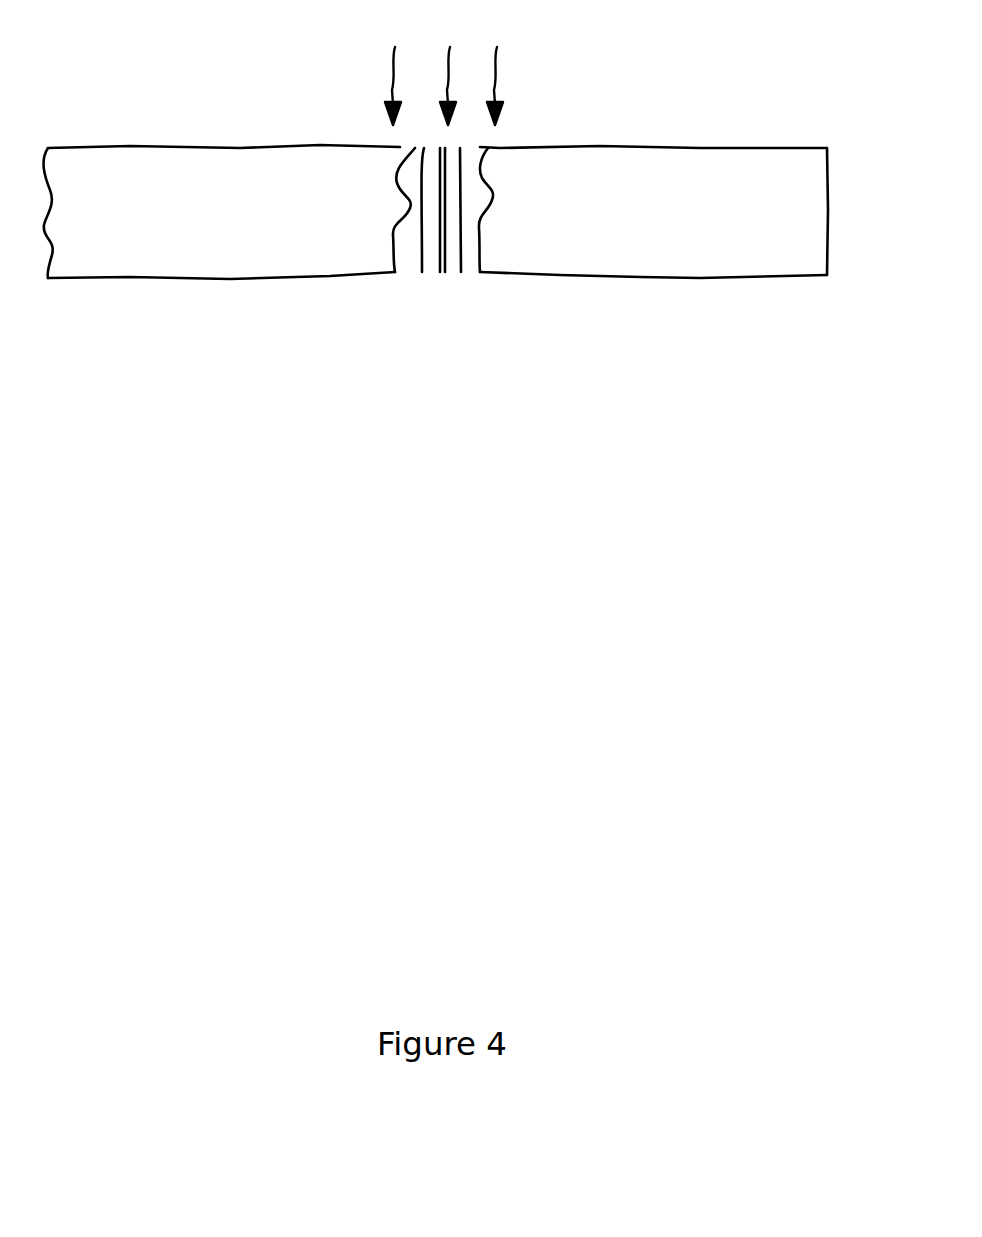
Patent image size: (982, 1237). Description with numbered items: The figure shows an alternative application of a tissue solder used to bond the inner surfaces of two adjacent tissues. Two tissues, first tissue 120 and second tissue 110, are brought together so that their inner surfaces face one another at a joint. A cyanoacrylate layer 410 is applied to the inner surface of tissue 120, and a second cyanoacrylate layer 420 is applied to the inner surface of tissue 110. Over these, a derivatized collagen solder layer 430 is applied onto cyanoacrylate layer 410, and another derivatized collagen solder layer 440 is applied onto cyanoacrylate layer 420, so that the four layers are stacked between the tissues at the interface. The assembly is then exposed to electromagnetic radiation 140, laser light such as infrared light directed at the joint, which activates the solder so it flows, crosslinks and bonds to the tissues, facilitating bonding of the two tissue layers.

The second tissue 110 is at (687, 263).
The first tissue 120 is at (120, 252).
The electromagnetic radiation 140 is at (515, 77).
The cyanoacrylate layer 410 is at (408, 263).
The cyanoacrylate layer 420 is at (465, 263).
The derivatized collagen solder layer 430 is at (435, 263).
The derivatized collagen solder layer 440 is at (448, 263).